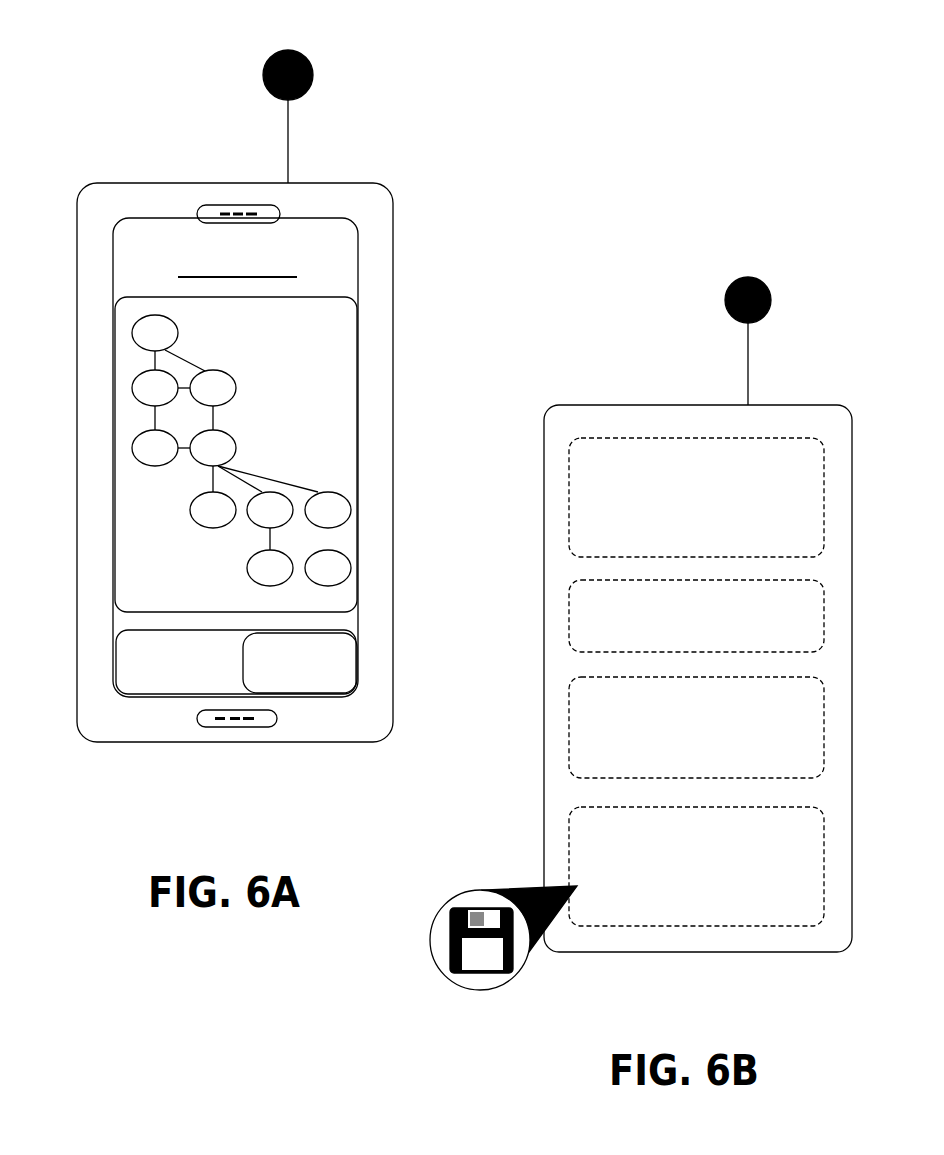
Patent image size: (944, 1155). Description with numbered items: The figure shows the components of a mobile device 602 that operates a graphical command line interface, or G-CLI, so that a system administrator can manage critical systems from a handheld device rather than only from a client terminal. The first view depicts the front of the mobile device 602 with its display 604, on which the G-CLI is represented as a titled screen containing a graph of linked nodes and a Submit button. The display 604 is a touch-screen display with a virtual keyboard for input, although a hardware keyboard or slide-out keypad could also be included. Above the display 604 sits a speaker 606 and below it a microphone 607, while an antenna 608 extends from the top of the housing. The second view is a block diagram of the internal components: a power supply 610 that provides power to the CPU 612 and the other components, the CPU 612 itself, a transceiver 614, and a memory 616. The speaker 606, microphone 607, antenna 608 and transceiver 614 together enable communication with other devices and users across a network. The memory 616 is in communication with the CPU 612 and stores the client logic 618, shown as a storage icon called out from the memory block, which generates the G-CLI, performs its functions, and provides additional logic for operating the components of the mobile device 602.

In FIG. 6A, the mobile device 602 is at (273, 441).
In FIG. 6A, the display 604 is at (201, 421).
In FIG. 6A, the speaker 606 is at (209, 177).
In FIG. 6A, the microphone 607 is at (202, 760).
In FIG. 6A, the antenna 608 is at (346, 104).
In FIG. 6B, the power supply 610 is at (635, 492).
In FIG. 6B, the CPU 612 is at (635, 605).
In FIG. 6B, the transceiver 614 is at (635, 727).
In FIG. 6B, the memory 616 is at (635, 858).
In FIG. 6B, the client logic 618 is at (459, 941).